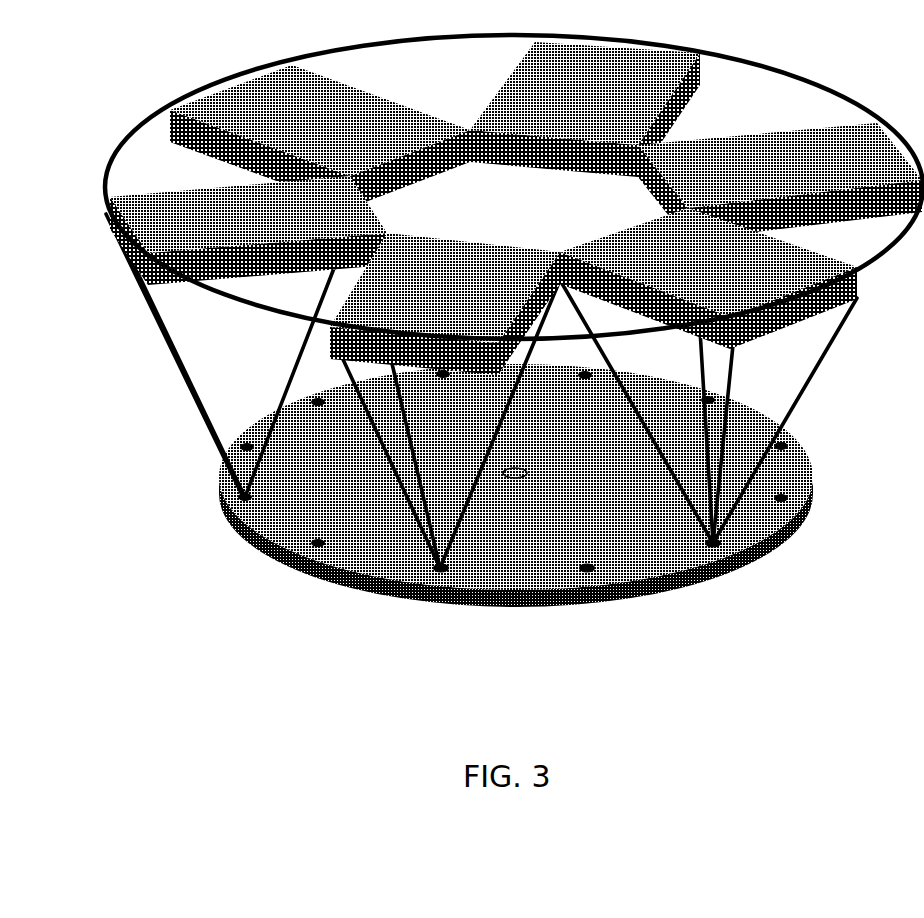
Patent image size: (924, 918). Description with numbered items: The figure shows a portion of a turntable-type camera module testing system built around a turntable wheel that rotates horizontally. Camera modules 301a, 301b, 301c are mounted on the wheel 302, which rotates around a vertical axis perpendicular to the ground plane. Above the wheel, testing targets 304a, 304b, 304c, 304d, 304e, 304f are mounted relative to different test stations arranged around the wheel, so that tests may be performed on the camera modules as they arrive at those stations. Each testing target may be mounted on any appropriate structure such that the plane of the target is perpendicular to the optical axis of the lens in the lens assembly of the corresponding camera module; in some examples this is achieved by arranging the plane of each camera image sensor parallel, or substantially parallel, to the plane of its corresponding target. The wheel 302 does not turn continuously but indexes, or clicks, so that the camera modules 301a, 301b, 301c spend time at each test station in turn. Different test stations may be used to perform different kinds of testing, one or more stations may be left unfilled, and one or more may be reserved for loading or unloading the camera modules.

The camera module 301a is at (443, 574).
The camera module 301b is at (598, 574).
The camera module 301c is at (725, 550).
The wheel 302 is at (302, 556).
The testing target 304a is at (445, 304).
The testing target 304b is at (248, 230).
The testing target 304c is at (320, 136).
The testing target 304d is at (585, 109).
The testing target 304e is at (780, 181).
The testing target 304f is at (708, 278).